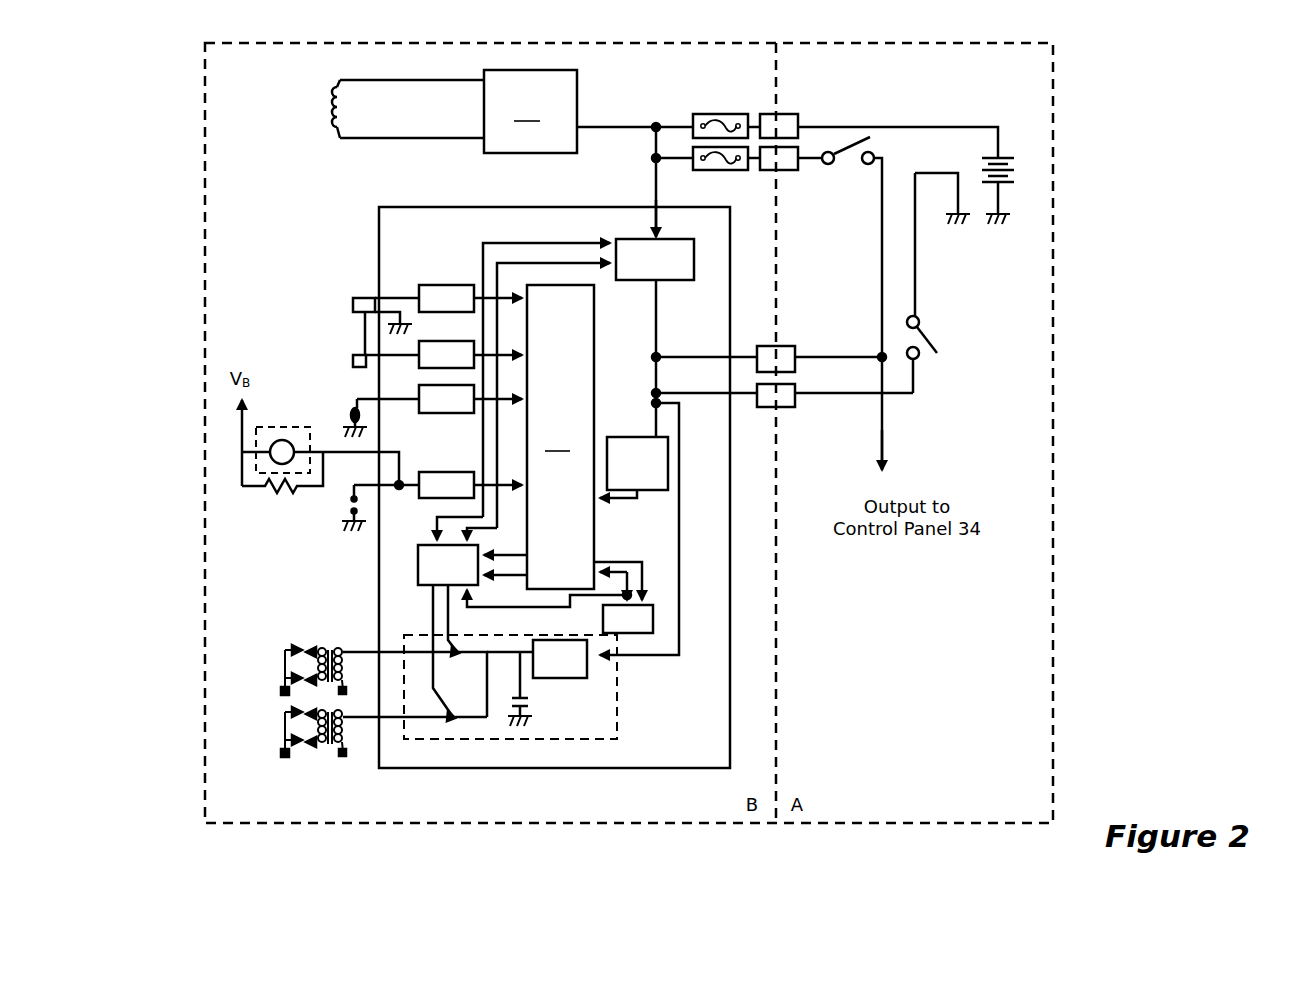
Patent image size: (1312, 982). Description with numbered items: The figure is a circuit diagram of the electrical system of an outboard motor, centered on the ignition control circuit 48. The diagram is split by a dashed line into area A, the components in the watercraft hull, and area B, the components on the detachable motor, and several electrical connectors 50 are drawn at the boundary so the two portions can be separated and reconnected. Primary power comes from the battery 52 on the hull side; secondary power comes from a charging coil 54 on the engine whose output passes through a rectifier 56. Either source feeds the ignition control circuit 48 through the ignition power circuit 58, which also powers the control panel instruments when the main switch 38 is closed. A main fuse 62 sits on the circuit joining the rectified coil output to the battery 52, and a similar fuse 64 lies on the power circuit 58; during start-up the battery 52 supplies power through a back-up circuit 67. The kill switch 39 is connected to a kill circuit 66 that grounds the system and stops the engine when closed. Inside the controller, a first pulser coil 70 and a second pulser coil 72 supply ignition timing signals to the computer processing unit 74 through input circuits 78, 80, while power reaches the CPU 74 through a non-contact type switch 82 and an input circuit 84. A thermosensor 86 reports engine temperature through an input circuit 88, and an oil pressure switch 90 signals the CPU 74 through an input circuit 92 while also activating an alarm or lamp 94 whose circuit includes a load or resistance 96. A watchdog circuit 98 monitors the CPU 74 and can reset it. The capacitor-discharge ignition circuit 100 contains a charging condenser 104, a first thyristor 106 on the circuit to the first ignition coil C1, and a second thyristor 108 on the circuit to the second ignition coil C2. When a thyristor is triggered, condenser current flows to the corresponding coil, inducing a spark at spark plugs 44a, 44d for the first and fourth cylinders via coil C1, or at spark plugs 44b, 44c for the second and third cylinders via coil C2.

The main switch 38 is at (846, 166).
The kill switch 39 is at (935, 327).
The spark plug 44a is at (269, 670).
The spark plug 44b is at (269, 725).
The spark plug 44c is at (270, 731).
The spark plug 44d is at (269, 684).
The ignition control circuit 48 is at (452, 207).
The electrical connectors 50 is at (788, 113).
The battery 52 is at (1011, 146).
The charging coil 54 is at (322, 104).
The rectifier 56 is at (530, 111).
The ignition power circuit 58 is at (648, 193).
The main fuse 62 is at (720, 113).
The fuse 64 is at (723, 172).
The kill circuit 66 is at (856, 408).
The back-up circuit 67 is at (847, 351).
The first pulser coil 70 is at (348, 303).
The second pulser coil 72 is at (347, 357).
The computer processing unit 74 is at (560, 437).
The input circuit 78 is at (470, 298).
The input circuit 80 is at (470, 354).
The non-contact type switch 82 is at (647, 447).
The input circuit 84 is at (634, 467).
The thermosensor 86 is at (342, 412).
The input circuit 88 is at (470, 399).
The oil pressure switch 90 is at (340, 514).
The input circuit 92 is at (470, 485).
The alarm or lamp 94 is at (280, 439).
The load or resistance 96 is at (272, 493).
The watchdog circuit 98 is at (623, 597).
The capacitor-discharge ignition circuit 100 is at (624, 712).
The charging condenser 104 is at (543, 702).
The first thyristor 106 is at (458, 658).
The second thyristor 108 is at (454, 725).
The first ignition coil C1 is at (338, 640).
The second ignition coil C2 is at (352, 748).